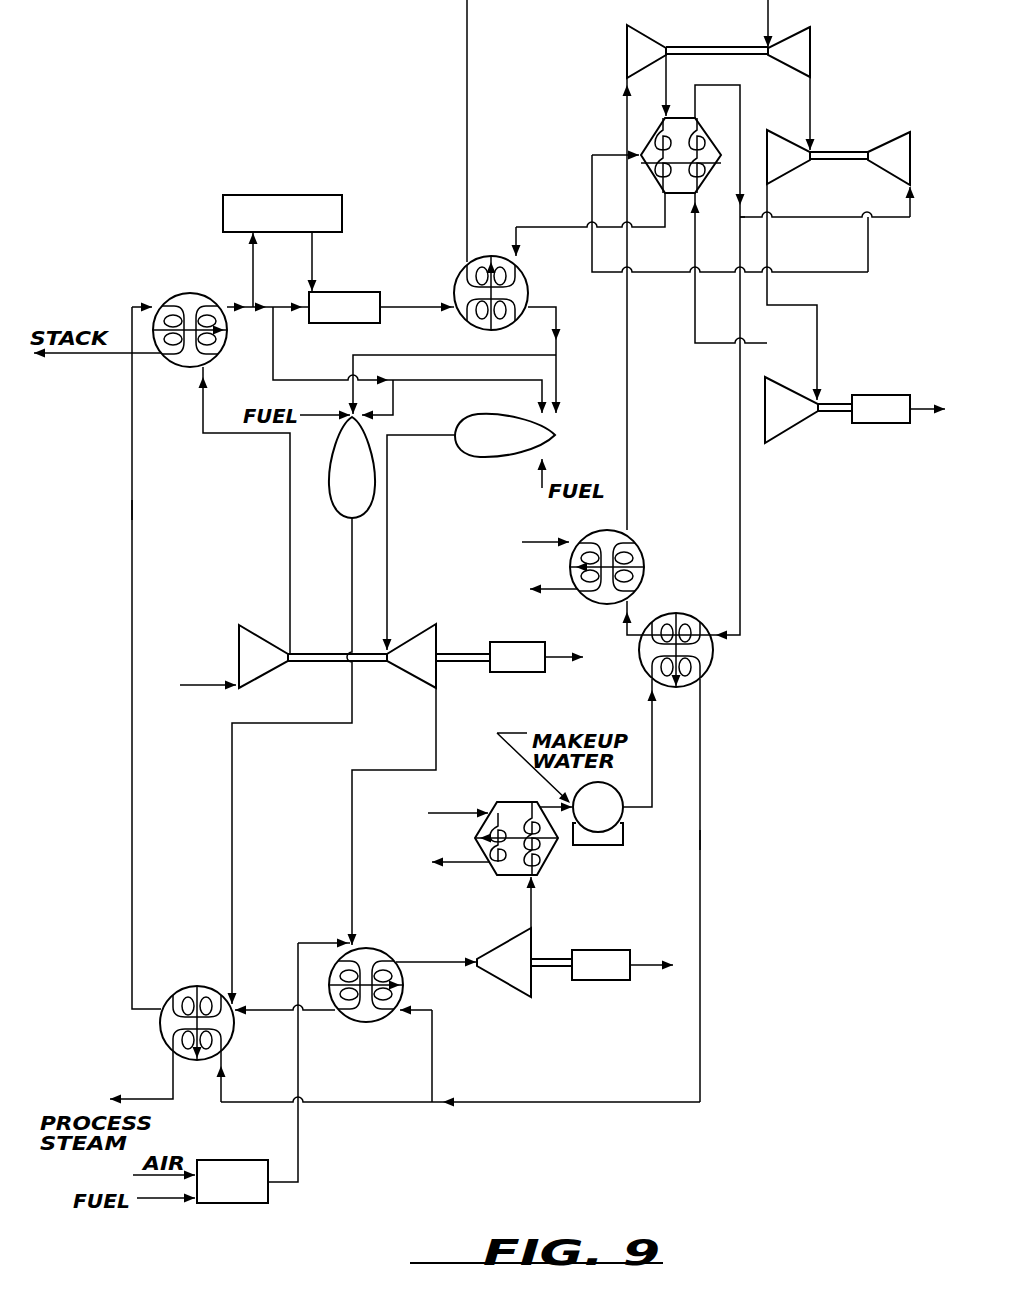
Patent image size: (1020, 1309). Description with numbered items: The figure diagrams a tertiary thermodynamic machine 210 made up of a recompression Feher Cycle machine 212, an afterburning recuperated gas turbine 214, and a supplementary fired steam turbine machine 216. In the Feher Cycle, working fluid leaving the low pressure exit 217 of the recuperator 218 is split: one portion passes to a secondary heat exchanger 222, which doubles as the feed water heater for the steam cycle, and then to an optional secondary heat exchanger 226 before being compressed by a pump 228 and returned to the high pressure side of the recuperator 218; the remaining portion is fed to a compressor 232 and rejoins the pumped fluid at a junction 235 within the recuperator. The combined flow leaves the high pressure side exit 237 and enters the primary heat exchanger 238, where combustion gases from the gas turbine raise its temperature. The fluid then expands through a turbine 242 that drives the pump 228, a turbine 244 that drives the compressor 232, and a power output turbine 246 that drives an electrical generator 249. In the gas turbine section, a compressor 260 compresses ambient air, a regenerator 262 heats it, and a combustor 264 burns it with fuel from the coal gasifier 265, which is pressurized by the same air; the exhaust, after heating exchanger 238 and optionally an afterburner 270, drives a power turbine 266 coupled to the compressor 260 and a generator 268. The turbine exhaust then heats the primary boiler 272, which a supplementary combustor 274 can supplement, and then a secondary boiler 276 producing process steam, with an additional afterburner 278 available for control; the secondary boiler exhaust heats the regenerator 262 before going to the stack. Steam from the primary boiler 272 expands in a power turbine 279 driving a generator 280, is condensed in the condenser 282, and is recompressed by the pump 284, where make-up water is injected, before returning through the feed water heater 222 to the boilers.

The tertiary thermodynamic machine 210 is at (570, 1128).
The recompression Feher Cycle machine 212 is at (880, 264).
The afterburning recuperated gas turbine 214 is at (100, 516).
The supplementary fired steam turbine machine 216 is at (772, 838).
The low pressure exit 217 is at (657, 172).
The recuperator 218 is at (657, 118).
The secondary heat exchanger 222 is at (707, 604).
The optional secondary heat exchanger 226 is at (640, 550).
The pump 228 is at (626, 43).
The compressor 232 is at (888, 136).
The junction 235 is at (648, 160).
The high pressure side exit 237 is at (677, 195).
The primary heat exchanger 238 is at (530, 290).
The turbine 242 is at (812, 56).
The turbine 244 is at (782, 130).
The power output turbine 246 is at (778, 443).
The electrical generator 249 is at (878, 395).
The compressor 260 is at (241, 628).
The regenerator 262 is at (188, 293).
The combustor 264 is at (366, 286).
The coal gasifier 265 is at (343, 215).
The power turbine 266 is at (407, 670).
The generator 268 is at (541, 638).
The afterburner 270 is at (462, 417).
The primary boiler 272 is at (361, 1023).
The supplementary combustor 274 is at (252, 1149).
The secondary boiler 276 is at (203, 984).
The additional afterburner 278 is at (331, 506).
The power turbine 279 is at (511, 991).
The generator 280 is at (629, 950).
The condenser 282 is at (508, 801).
The pump 284 is at (623, 815).